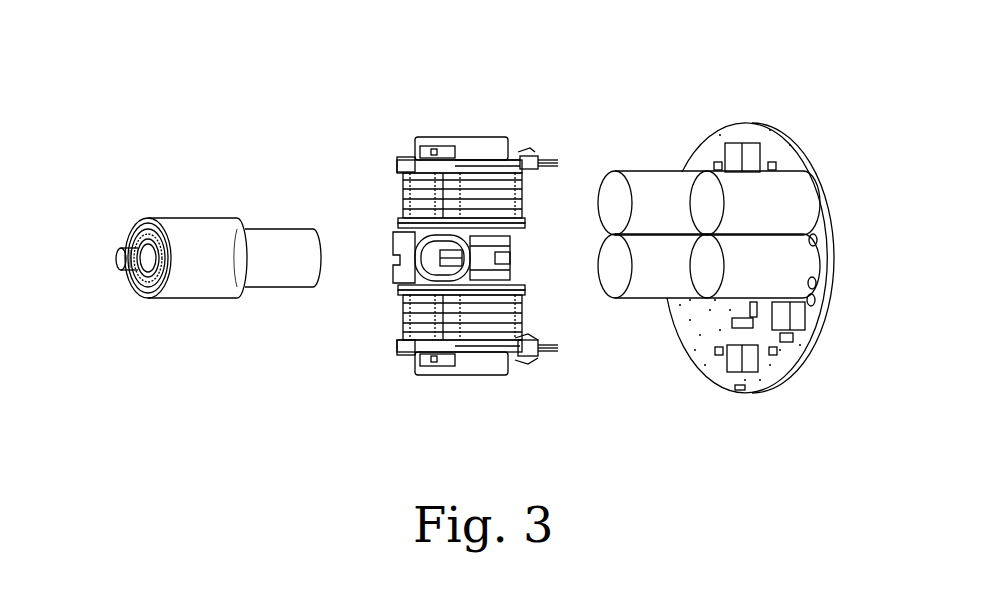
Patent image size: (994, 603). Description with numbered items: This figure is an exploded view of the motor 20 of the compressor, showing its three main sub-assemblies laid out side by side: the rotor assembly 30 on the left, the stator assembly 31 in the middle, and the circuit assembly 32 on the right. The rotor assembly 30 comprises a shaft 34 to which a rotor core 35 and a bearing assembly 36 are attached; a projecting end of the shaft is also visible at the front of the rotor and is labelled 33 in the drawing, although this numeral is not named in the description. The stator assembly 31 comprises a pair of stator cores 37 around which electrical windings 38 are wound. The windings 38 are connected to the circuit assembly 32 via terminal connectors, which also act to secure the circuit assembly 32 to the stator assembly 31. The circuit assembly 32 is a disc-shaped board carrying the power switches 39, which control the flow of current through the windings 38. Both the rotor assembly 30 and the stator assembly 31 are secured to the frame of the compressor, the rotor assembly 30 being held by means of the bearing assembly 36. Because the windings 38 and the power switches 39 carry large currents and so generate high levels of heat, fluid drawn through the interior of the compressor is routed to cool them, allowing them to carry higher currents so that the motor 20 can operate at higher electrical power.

The motor 20 is at (163, 86).
The rotor assembly 30 is at (215, 218).
The stator assembly 31 is at (468, 137).
The circuit assembly 32 is at (750, 123).
The motor shaft 33 is at (121, 261).
The shaft 34 is at (280, 287).
The rotor core 35 is at (197, 298).
The bearing assembly 36 is at (462, 375).
The stator cores 37 is at (398, 320).
The electrical windings 38 is at (553, 347).
The power switches 39 is at (727, 360).